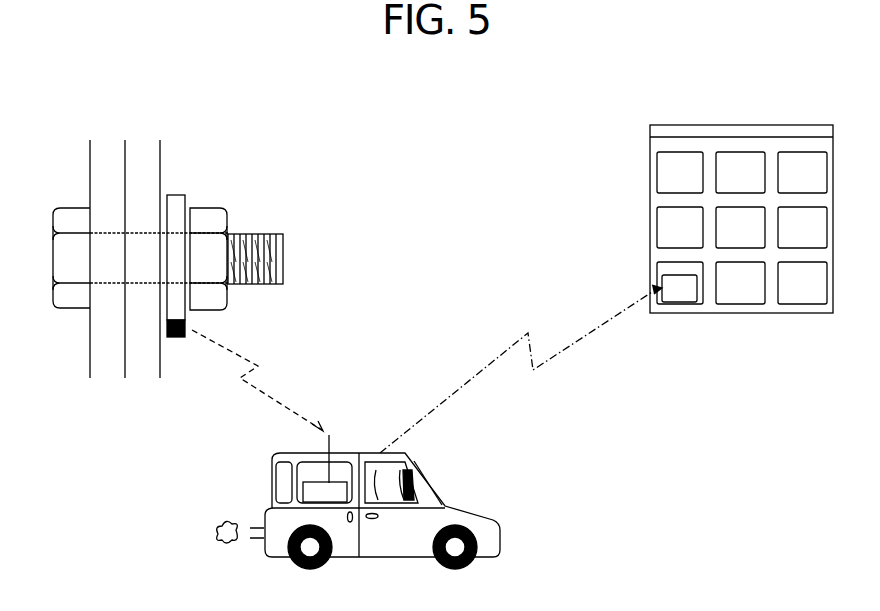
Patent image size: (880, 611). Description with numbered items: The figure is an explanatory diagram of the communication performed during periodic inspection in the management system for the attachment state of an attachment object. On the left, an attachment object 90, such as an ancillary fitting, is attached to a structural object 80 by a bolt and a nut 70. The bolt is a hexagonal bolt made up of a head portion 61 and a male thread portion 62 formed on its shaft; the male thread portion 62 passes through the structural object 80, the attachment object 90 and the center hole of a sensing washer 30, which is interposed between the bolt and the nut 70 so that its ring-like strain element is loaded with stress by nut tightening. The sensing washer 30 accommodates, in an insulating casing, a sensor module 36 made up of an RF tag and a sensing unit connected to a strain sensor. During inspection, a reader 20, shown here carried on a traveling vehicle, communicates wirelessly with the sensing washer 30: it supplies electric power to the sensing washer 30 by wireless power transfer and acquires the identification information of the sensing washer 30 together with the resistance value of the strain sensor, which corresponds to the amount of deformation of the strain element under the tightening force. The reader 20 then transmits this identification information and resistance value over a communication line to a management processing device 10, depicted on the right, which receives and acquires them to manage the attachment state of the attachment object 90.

The management processing device 10 is at (677, 303).
The reader 20 is at (303, 492).
The sensing washer 30 is at (176, 195).
The sensor module 36 is at (178, 337).
The head portion 61 is at (72, 308).
The male thread portion 62 is at (284, 258).
The nut 70 is at (215, 208).
The structural object 80 is at (90, 165).
The attachment object 90 is at (160, 147).